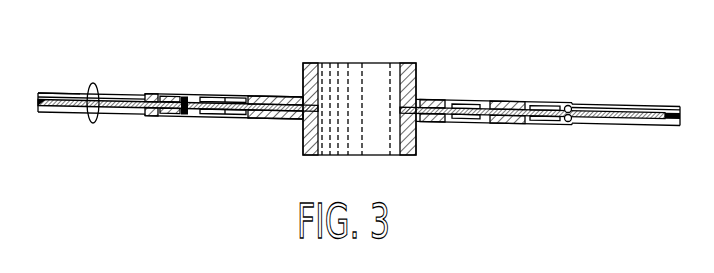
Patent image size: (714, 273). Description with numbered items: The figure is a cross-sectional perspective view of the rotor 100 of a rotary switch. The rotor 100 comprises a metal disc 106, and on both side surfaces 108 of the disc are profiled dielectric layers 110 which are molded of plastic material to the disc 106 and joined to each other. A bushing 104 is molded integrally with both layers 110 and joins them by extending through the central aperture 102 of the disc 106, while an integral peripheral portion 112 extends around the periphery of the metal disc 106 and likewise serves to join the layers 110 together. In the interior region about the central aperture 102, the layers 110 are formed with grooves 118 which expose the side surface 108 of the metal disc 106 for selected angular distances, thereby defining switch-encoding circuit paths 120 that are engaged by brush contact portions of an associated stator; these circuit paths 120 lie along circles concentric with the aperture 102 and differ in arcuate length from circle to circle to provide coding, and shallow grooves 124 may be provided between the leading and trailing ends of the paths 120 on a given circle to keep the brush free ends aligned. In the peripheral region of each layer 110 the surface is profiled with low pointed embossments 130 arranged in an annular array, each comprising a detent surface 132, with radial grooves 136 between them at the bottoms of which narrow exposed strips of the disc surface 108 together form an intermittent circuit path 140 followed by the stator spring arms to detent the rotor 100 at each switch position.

The rotor 100 is at (488, 56).
The central aperture 102 is at (403, 80).
The bushing 104 is at (410, 72).
The metal disc 106 is at (616, 100).
The side surface 108 is at (658, 106).
The profiled dielectric layer 110 is at (570, 94).
The integral peripheral portion 112 is at (127, 113).
The groove 118 is at (162, 97).
The switch-encoding circuit path 120 is at (250, 100).
The shallow groove 124 is at (183, 100).
The pointed embossment 130 is at (42, 97).
The detent surface 132 is at (68, 93).
The radial groove 136 is at (138, 94).
The intermittent circuit path 140 is at (95, 123).